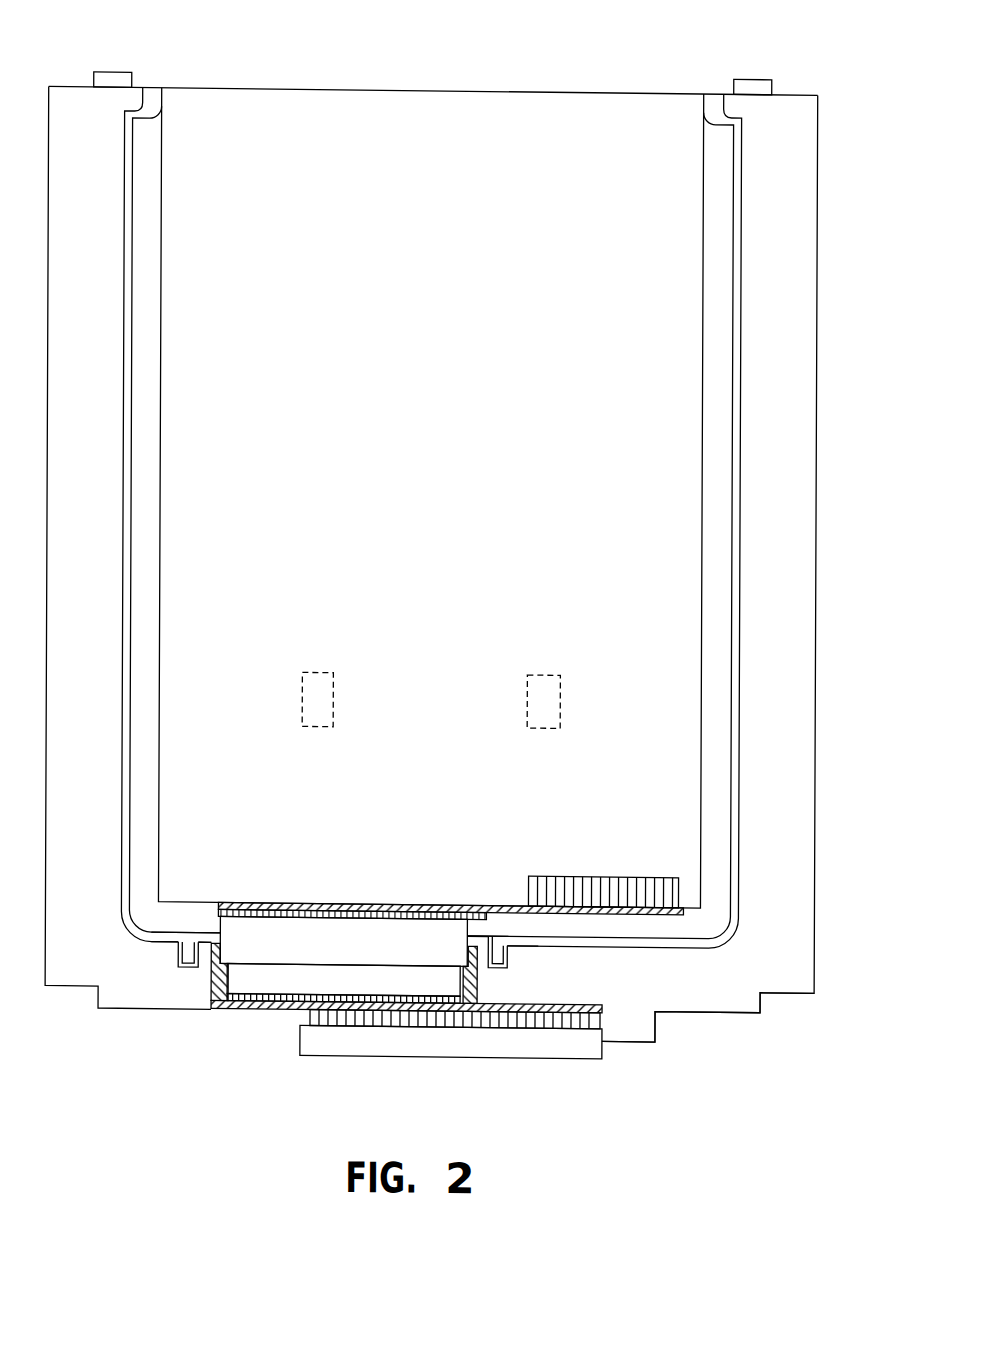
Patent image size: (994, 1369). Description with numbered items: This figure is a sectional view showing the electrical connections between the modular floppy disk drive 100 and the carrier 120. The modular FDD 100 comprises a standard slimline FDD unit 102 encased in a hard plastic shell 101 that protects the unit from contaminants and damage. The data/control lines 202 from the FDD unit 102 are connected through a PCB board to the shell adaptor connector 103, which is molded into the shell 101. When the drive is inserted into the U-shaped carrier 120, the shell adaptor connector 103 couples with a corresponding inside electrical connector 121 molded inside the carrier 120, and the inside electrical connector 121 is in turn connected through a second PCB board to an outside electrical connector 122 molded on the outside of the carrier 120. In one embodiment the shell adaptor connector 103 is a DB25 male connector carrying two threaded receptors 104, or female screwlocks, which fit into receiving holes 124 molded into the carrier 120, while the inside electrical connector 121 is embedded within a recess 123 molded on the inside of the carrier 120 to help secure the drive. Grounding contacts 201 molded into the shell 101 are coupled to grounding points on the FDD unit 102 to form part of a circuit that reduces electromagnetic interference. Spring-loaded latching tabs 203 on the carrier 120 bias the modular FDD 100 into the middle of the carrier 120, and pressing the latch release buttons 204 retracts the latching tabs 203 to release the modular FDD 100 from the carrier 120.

The modular floppy disk drive 100 is at (440, 91).
The shell 101 is at (732, 389).
The FDD unit 102 is at (462, 268).
The shell adaptor connector 103 is at (230, 953).
The threaded receptors 104 is at (187, 945).
The carrier 120 is at (713, 1010).
The inside electrical connector 121 is at (270, 984).
The outside electrical connector 122 is at (573, 1056).
The recess 123 is at (220, 1008).
The receiving holes 124 is at (180, 958).
The grounding contacts 201 is at (318, 673).
The data/control lines 202 is at (613, 874).
The latching tabs 203 is at (142, 103).
The latch release buttons 204 is at (117, 76).